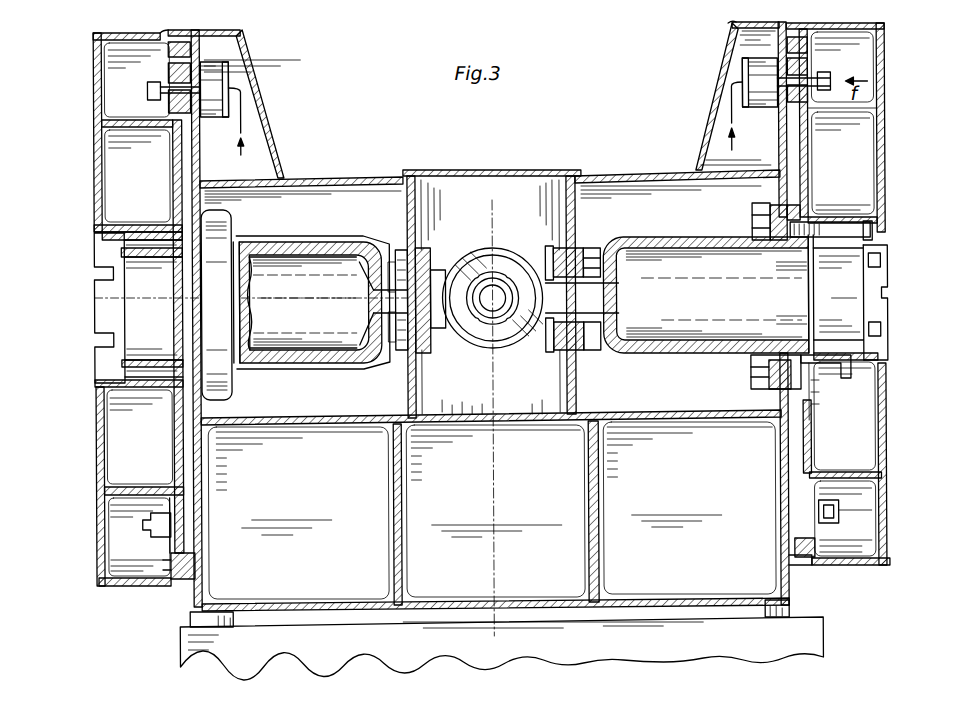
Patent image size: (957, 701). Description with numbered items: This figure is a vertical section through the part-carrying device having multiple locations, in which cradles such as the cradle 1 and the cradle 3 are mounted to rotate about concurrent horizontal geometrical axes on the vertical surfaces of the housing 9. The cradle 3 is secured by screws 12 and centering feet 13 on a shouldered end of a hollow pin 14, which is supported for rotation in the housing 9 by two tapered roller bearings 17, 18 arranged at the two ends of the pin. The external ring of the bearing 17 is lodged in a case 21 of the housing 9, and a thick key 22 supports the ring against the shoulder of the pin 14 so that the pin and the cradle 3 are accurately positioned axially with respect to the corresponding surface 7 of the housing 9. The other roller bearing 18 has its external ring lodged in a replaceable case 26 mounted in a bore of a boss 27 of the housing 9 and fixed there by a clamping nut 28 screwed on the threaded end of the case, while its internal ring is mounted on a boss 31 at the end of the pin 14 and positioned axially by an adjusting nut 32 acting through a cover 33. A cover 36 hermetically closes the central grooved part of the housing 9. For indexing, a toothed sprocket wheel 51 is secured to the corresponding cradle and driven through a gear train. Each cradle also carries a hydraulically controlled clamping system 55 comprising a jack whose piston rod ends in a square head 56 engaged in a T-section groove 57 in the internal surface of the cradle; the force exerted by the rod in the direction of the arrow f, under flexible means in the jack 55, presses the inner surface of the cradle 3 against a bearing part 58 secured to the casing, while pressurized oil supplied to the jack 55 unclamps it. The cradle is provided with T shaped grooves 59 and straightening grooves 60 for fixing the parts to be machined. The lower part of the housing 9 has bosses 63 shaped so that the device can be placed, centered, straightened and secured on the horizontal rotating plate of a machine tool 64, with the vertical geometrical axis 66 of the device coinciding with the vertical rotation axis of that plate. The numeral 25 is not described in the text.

The cradle 1 is at (95, 412).
The cradle 3 is at (887, 147).
The surface of the housing 7 is at (817, 560).
The housing 9 is at (690, 168).
The screws 12 is at (887, 235).
The centering feet 13 is at (817, 363).
The hollow pin 14 is at (660, 236).
The tapered roller bearing 17 is at (777, 254).
The tapered roller bearing 18 is at (616, 300).
The case 21 is at (753, 210).
The thick key 22 is at (760, 210).
The lower bearing 25 is at (603, 357).
The replaceable case 26 is at (603, 243).
The boss 27 is at (575, 246).
The clamping nut 28 is at (430, 250).
The boss 31 is at (487, 315).
The adjusting nut 32 is at (502, 270).
The cover 33 is at (552, 333).
The cover 36 is at (437, 170).
The toothed sprocket wheel 51 is at (179, 581).
The hydraulically controlled clamping system 55 is at (745, 64).
The square head of the rod 56 is at (832, 80).
The groove 57 is at (837, 512).
The bearing part 58 is at (797, 104).
The T shaped grooves 59 is at (880, 260).
The straightening grooves 60 is at (888, 292).
The bosses 63 is at (228, 622).
The horizontal rotating plate of a machine tool 64 is at (182, 628).
The vertical geometrical axis 66 is at (495, 496).